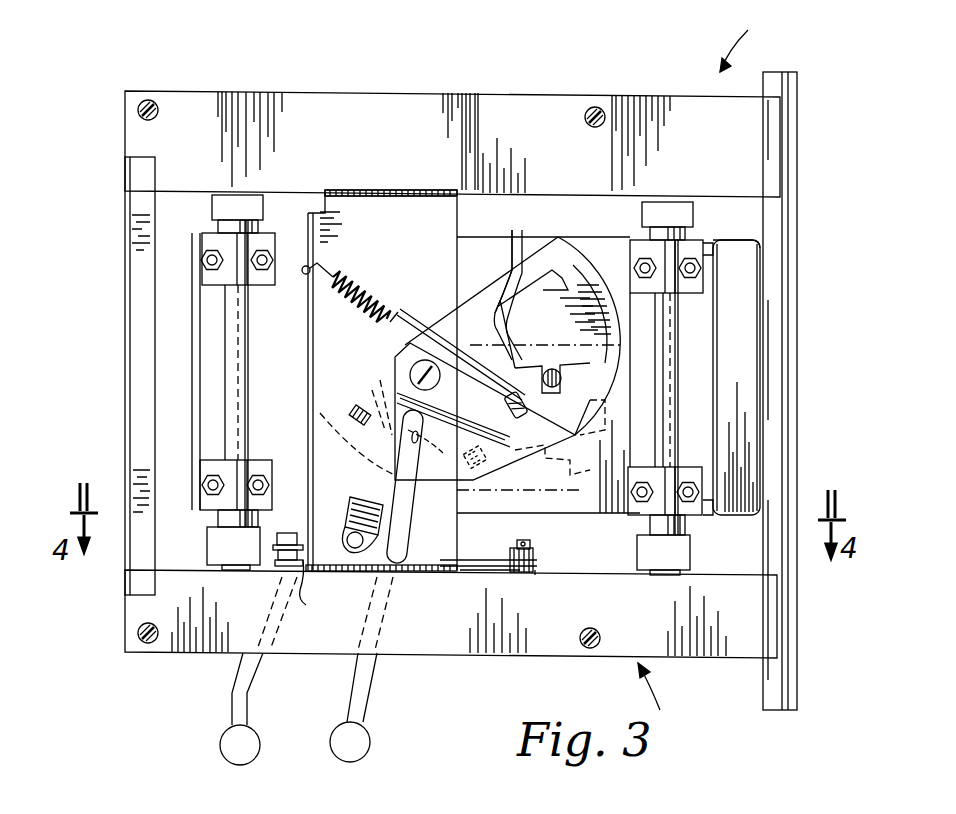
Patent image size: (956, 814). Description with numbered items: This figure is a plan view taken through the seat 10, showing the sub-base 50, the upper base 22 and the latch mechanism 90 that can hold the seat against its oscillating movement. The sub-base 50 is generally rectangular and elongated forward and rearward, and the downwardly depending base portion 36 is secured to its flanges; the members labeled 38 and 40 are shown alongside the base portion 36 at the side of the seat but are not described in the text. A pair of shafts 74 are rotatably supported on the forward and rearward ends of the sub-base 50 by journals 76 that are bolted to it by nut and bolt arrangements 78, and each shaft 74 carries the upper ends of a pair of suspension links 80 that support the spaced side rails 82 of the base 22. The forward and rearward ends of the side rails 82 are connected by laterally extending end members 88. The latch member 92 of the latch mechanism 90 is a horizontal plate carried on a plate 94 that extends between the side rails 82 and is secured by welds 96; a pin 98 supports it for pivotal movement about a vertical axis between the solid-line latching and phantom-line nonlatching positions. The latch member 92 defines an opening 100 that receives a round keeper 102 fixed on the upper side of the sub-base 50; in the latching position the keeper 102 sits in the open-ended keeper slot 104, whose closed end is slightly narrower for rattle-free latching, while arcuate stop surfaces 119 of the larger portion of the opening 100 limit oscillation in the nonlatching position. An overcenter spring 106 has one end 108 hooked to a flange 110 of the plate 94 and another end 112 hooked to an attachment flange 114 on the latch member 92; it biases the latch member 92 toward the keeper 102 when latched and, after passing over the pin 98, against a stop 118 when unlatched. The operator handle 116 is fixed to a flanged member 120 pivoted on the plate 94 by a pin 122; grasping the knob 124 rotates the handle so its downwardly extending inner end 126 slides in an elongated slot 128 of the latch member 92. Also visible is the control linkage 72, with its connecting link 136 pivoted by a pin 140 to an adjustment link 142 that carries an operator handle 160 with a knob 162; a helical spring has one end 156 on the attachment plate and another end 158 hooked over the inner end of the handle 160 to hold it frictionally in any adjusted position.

The seat 10 is at (738, 39).
The base 22 is at (663, 693).
The base portion 36 is at (757, 238).
The clip 38 is at (711, 240).
The channel member 40 is at (745, 407).
The sub-base 50 is at (526, 247).
The control linkage 72 is at (548, 565).
The shafts 74 is at (235, 359).
The journals 76 is at (262, 243).
The nut and bolt arrangements 78 is at (258, 262).
The suspension links 80 is at (232, 209).
The side rails 82 is at (536, 117).
The end members 88 is at (140, 330).
The latch mechanism 90 is at (445, 306).
The latch member 92 is at (481, 302).
The plate 94 is at (325, 330).
The welds 96 is at (405, 193).
The pin 98 is at (430, 372).
The opening 100 is at (560, 290).
The keeper 102 is at (552, 368).
The keeper slot 104 is at (595, 415).
The overcenter spring 106 is at (348, 288).
The one end 108 is at (320, 264).
The flange 110 is at (320, 222).
The another end 112 is at (512, 407).
The attachment flange 114 is at (468, 348).
The operator handle 116 is at (360, 699).
The stop 118 is at (356, 406).
The arcuate stop surfaces 119 is at (538, 310).
The flanged member 120 is at (406, 522).
The pin 122 is at (360, 490).
The knob 124 is at (350, 743).
The inner end 126 is at (395, 420).
The elongated slot 128 is at (388, 384).
The connecting link 136 is at (517, 572).
The pin 140 is at (525, 543).
The adjustment link 142 is at (485, 570).
The one end 156 is at (324, 590).
The another end 158 is at (286, 533).
The operator handle 160 is at (258, 660).
The knob 162 is at (235, 748).